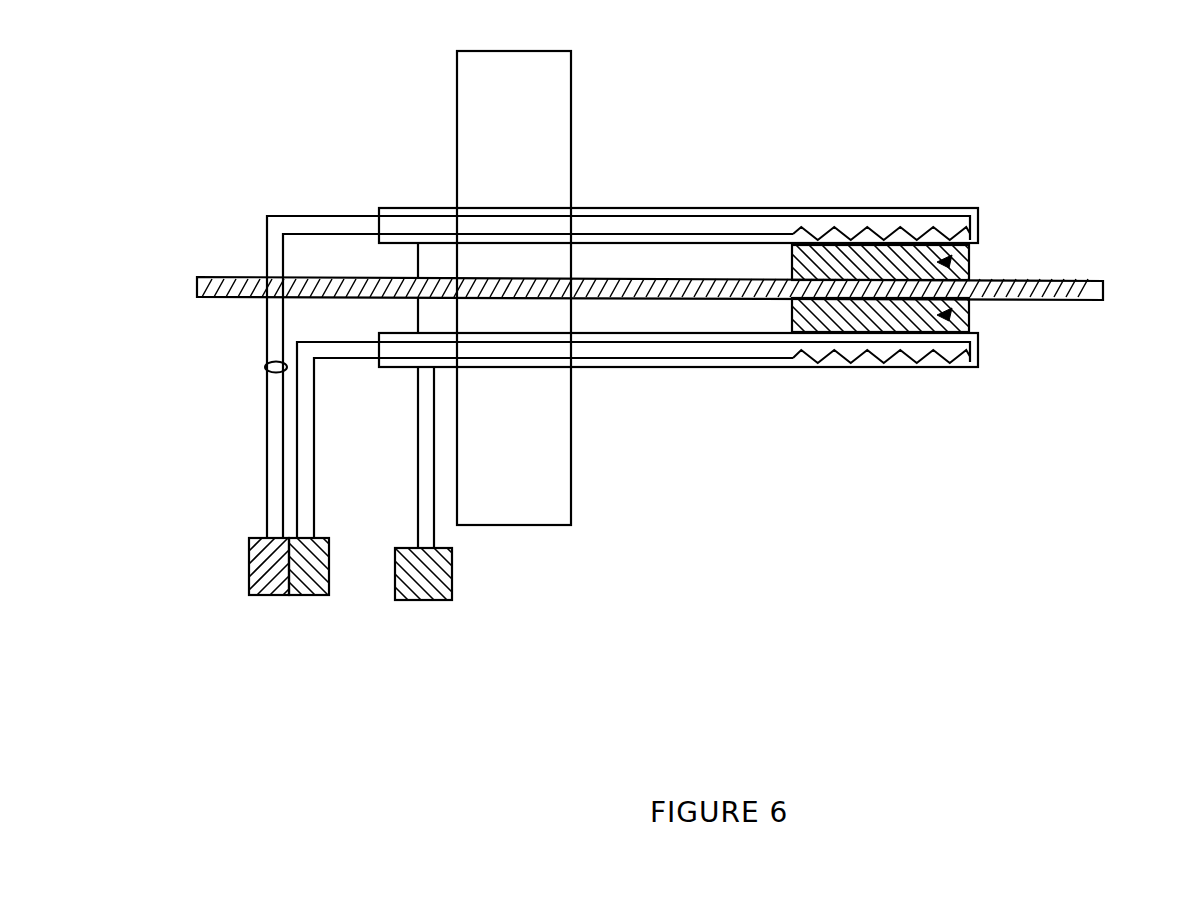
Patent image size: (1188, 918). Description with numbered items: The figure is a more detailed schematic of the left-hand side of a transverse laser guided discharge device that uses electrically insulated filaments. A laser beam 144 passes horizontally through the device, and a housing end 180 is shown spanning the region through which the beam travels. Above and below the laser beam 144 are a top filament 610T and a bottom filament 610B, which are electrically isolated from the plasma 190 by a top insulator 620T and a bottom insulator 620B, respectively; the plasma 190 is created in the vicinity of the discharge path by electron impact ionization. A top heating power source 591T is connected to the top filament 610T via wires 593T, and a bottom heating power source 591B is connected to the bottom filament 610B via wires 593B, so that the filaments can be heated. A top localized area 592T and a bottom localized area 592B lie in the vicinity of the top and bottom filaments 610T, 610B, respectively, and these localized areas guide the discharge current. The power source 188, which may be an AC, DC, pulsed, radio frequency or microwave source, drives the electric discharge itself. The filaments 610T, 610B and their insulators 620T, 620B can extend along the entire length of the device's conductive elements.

The housing end 180 is at (572, 90).
The laser beam 144 is at (225, 277).
The top insulator 620T is at (705, 192).
The bottom insulator 620B is at (677, 368).
The top filament 610T is at (893, 235).
The bottom filament 610B is at (870, 356).
The top localized area 592T is at (928, 243).
The bottom localized area 592B is at (942, 335).
The plasma region 190 is at (945, 311).
The wires 593T is at (266, 366).
The wires 593B is at (315, 448).
The top heating power source 591T is at (248, 567).
The bottom heating power source 591B is at (330, 570).
The power source 188 is at (452, 577).